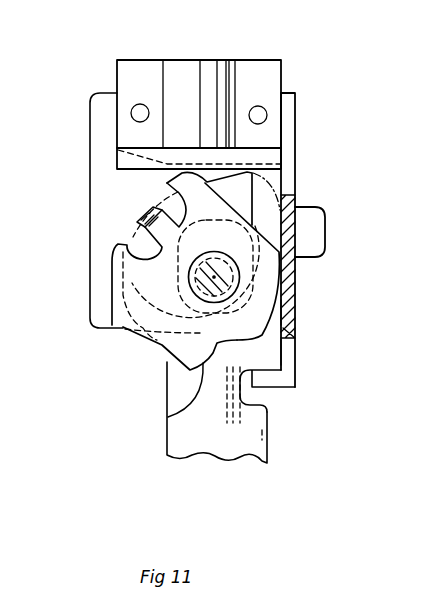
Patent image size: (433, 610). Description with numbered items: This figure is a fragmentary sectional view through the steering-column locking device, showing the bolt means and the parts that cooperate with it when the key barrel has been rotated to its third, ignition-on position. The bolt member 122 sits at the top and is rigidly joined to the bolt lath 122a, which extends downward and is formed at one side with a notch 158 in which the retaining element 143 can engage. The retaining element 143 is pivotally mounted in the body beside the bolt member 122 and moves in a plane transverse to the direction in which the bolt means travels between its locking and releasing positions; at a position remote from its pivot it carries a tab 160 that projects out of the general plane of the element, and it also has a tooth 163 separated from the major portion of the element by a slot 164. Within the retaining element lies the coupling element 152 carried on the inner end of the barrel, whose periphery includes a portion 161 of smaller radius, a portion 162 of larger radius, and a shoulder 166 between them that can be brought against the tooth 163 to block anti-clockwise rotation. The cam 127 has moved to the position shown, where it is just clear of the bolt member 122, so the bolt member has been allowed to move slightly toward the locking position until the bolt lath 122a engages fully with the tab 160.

The bolt member 122 is at (262, 82).
The bolt lath 122a is at (185, 445).
The retaining element 143 is at (298, 153).
The cam 127 is at (140, 237).
The coupling element 152 is at (113, 302).
The portion of larger radius 162 is at (162, 345).
The shoulder 166 is at (168, 415).
The tab 160 is at (273, 387).
The notch 158 is at (260, 405).
The portion of smaller radius 161 is at (294, 340).
The tooth 163 is at (286, 313).
The slot 164 is at (298, 282).